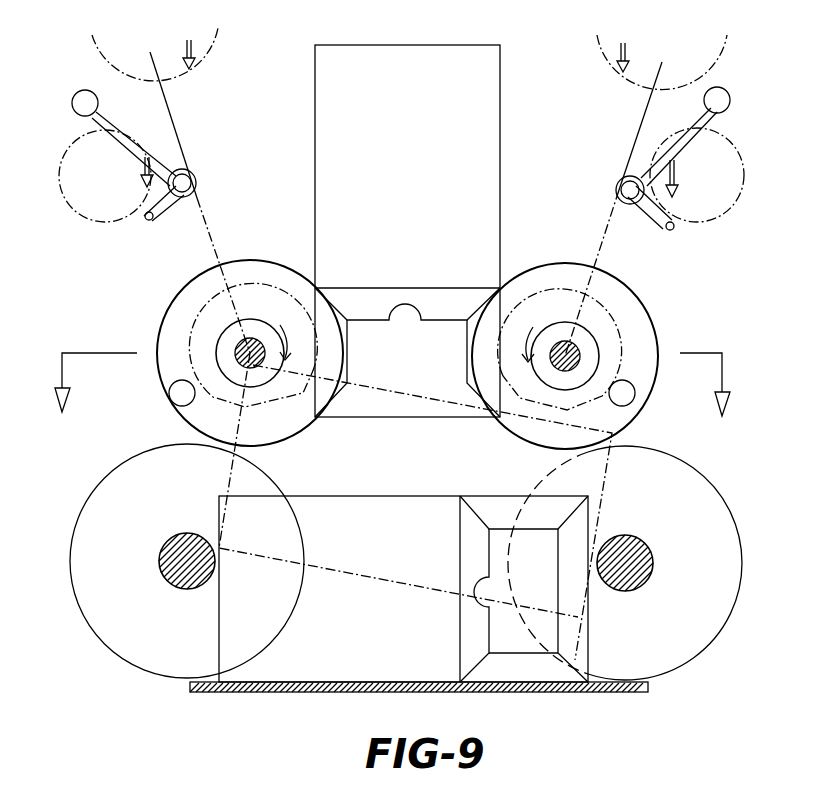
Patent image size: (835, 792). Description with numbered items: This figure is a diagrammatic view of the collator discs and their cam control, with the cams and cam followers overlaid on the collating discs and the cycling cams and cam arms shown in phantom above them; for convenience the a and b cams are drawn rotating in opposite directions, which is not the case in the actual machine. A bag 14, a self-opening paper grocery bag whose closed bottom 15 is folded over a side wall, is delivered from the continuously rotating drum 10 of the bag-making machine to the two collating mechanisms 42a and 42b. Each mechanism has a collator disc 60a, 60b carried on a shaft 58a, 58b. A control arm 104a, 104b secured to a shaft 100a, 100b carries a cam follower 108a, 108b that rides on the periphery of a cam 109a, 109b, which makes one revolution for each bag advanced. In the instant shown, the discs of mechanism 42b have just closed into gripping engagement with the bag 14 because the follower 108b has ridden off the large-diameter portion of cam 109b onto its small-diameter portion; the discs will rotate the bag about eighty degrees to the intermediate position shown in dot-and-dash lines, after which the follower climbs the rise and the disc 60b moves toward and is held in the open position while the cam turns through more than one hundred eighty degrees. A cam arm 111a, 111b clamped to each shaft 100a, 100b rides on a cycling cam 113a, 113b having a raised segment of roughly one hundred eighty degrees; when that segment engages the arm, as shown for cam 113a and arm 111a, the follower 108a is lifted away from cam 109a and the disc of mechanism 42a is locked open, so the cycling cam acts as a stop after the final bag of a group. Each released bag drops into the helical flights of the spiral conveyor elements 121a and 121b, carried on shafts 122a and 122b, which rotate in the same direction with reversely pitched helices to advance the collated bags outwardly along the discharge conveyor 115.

The drum 10 is at (395, 400).
The bag 14 is at (500, 142).
The closed bottom 15 is at (434, 292).
The collating mechanism 42a is at (160, 294).
The collating mechanism 42b is at (648, 301).
The shaft 58a is at (257, 348).
The shaft 58b is at (572, 345).
The collator disc 60a is at (175, 318).
The collator disc 60b is at (648, 336).
The shaft 100a is at (195, 179).
The shaft 100b is at (617, 191).
The control arm 104a is at (98, 121).
The control arm 104b is at (690, 127).
The cam follower 108a is at (75, 100).
The cam follower 108b is at (727, 108).
The cam 109a is at (214, 82).
The cam 109b is at (600, 88).
The cam arm 111a is at (154, 222).
The cam arm 111b is at (673, 230).
The cycling cam 113a is at (86, 210).
The cycling cam 113b is at (742, 169).
The discharge conveyor 115 is at (248, 693).
The spiral conveyor element 121a is at (85, 513).
The spiral conveyor element 121b is at (728, 531).
The shaft 122a is at (180, 588).
The shaft 122b is at (650, 582).